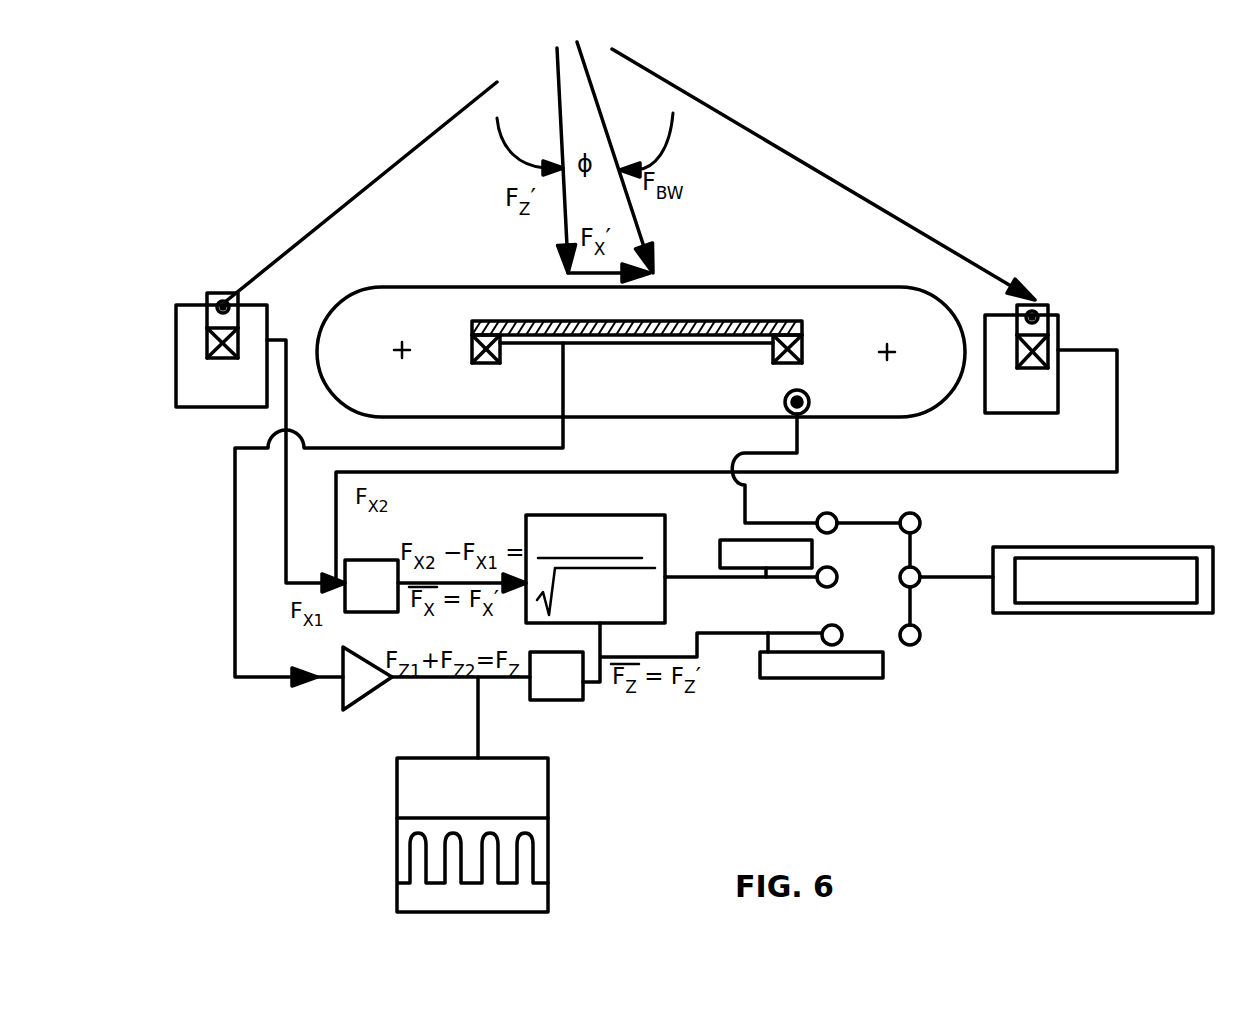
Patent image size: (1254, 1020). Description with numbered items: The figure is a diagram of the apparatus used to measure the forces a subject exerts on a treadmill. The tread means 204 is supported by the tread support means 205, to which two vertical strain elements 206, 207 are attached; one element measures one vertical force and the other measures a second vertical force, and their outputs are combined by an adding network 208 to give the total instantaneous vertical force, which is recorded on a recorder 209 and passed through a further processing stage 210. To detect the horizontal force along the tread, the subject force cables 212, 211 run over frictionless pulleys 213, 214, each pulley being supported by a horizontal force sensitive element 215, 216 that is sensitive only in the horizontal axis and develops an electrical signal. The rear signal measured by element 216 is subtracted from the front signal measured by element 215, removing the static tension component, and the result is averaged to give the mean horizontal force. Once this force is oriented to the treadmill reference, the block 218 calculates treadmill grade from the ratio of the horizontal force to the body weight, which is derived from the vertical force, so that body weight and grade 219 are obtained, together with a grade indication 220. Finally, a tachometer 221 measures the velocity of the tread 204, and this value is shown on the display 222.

The tread means 204 is at (803, 288).
The tread support means 205 is at (728, 323).
The vertical strain element 206 is at (472, 352).
The vertical strain element 207 is at (805, 345).
The adding network 208 is at (372, 700).
The recorder 209 is at (397, 818).
The signal processing unit 210 is at (534, 700).
The subject force cable 211 is at (322, 212).
The subject force cable 212 is at (853, 190).
The frictionless pulley 213 is at (207, 300).
The frictionless pulley 214 is at (1050, 305).
The horizontal strain gauge 215 is at (207, 345).
The horizontal strain gauge 216 is at (1057, 340).
The grade calculation block 218 is at (635, 515).
The body weight and grade output 219 is at (807, 678).
The grade indicator 220 is at (740, 540).
The tachometer 221 is at (810, 405).
The velocity display 222 is at (1177, 547).